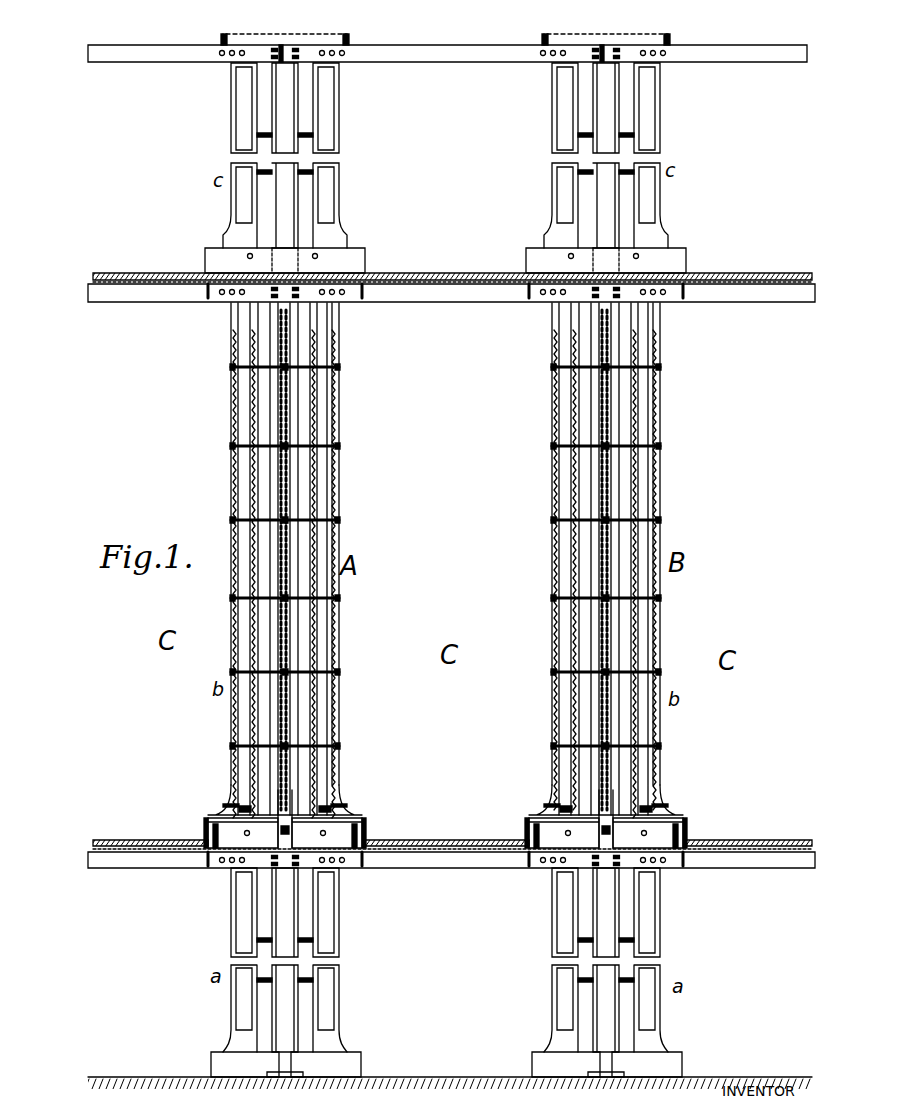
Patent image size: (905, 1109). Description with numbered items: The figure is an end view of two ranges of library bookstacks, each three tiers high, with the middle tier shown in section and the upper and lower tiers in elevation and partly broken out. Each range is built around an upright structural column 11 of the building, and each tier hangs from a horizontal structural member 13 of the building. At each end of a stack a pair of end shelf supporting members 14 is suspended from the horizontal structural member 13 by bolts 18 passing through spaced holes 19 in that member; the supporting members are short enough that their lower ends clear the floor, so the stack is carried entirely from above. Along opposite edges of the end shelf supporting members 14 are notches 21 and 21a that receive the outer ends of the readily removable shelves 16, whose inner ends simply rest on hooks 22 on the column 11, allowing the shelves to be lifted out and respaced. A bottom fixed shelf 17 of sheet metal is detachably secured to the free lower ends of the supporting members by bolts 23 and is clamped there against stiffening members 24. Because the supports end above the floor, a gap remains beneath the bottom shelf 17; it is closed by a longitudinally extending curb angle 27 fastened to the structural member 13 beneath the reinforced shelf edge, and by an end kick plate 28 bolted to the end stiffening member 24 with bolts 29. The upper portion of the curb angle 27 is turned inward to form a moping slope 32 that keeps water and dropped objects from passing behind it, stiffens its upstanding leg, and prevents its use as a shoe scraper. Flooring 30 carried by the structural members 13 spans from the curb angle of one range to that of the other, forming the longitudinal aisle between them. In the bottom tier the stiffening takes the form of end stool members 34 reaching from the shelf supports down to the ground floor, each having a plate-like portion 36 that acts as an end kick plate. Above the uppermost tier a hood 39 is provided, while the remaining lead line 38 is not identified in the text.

The structural column 11 is at (286, 214).
The horizontal structural member 13 is at (430, 64).
The end shelf supporting member 14 is at (234, 132).
The removable shelf 16 is at (298, 173).
The bottom fixed shelf 17 is at (340, 824).
The bolt 18 is at (242, 56).
The spaced hole 19 is at (220, 54).
The notch 21 is at (232, 405).
The notch 21a is at (254, 476).
The hook 22 is at (280, 562).
The bolt 23 is at (244, 808).
The stiffening member 24 is at (232, 818).
The curb angle 27 is at (212, 834).
The kick plate 28 is at (341, 248).
The bolt 29 is at (248, 256).
The flooring 30 is at (130, 262).
The moping slope 32 is at (222, 830).
The end stool member 34 is at (210, 1063).
The plate-like portion 36 is at (446, 1064).
The flared column foot 38 is at (296, 810).
The hood 39 is at (325, 42).